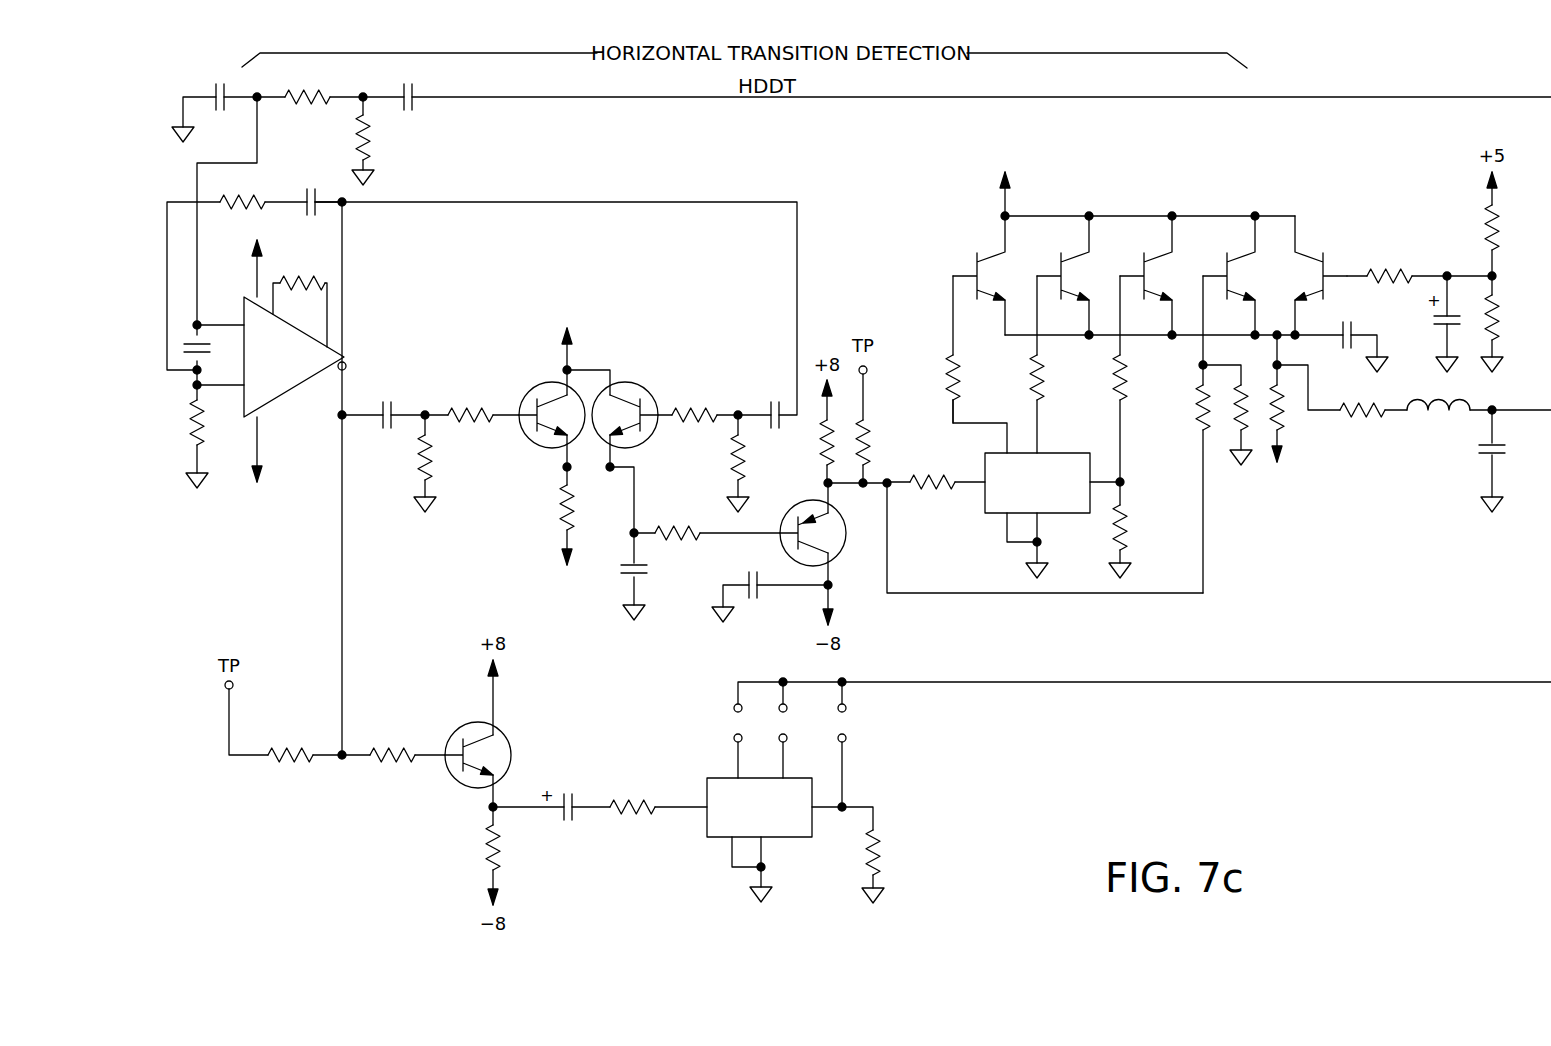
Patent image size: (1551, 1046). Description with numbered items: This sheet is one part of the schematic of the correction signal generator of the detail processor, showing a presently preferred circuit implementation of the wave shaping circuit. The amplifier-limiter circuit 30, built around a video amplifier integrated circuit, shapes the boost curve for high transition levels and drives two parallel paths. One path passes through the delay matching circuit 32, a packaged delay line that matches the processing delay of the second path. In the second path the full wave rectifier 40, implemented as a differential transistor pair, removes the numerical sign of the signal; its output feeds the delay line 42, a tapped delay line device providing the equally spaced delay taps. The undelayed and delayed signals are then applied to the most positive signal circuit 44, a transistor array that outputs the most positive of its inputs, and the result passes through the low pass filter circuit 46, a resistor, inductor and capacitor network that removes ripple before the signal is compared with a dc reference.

The amplifier-limiter circuit 30 is at (247, 533).
The delay matching circuit 32 is at (1121, 804).
The full wave rectifier 40 is at (522, 488).
The delay line 42 is at (962, 515).
The most positive signal circuit 44 is at (955, 203).
The low pass filter circuit 46 is at (1407, 467).